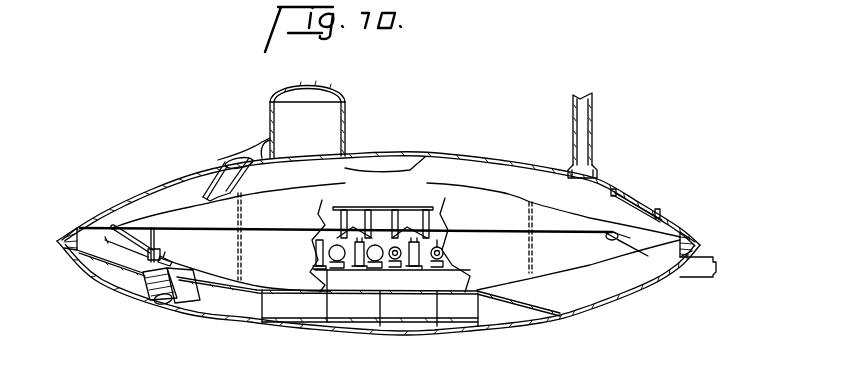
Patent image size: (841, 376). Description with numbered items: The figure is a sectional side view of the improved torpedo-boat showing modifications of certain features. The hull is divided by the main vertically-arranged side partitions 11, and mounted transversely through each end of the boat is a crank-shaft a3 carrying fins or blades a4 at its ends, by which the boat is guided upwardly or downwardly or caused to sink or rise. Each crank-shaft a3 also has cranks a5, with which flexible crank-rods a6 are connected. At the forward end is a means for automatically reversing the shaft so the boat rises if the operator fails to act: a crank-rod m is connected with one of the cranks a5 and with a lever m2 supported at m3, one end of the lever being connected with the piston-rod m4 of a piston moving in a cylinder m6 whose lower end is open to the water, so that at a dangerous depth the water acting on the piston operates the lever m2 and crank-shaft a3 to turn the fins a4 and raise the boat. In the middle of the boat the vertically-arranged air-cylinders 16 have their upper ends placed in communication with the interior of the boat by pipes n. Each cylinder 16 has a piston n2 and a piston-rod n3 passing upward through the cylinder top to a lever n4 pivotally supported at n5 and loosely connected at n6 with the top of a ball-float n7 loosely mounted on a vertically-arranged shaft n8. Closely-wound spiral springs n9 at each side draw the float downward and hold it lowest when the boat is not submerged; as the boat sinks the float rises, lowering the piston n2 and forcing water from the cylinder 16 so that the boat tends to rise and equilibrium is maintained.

The crank-shaft a3 is at (104, 240).
The fins or blades a4 is at (118, 244).
The crank a5 is at (110, 227).
The flexible crank-rod a6 is at (199, 228).
The crank-rod m is at (150, 256).
The lever m2 is at (158, 250).
The lever support m3 is at (156, 249).
The piston-rod m4 is at (172, 261).
The cylinder m6 is at (140, 274).
The pipe n is at (389, 249).
The piston n2 is at (316, 240).
The piston-rod n3 is at (375, 238).
The lever n4 is at (366, 240).
The pivot support n5 is at (340, 233).
The loose connection n6 is at (325, 222).
The ball-float n7 is at (334, 263).
The vertically-arranged shaft n8 is at (335, 212).
The spiral spring n9 is at (434, 263).
The side partition 11 is at (399, 210).
The air-cylinder 16 is at (315, 253).